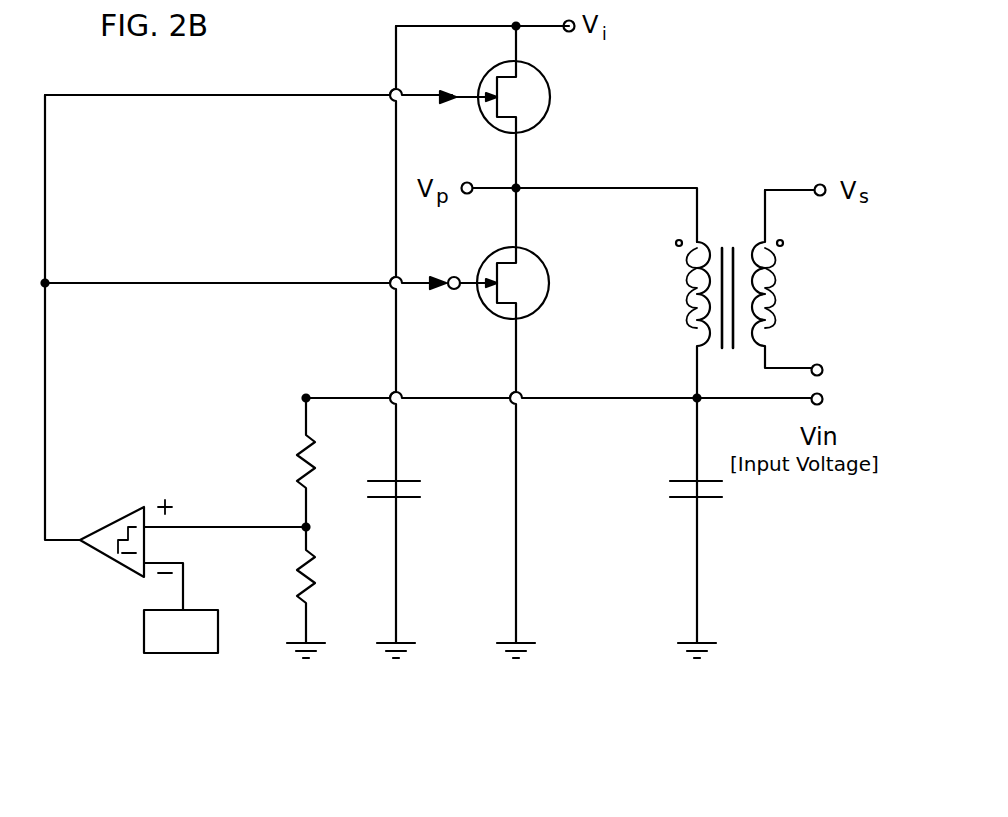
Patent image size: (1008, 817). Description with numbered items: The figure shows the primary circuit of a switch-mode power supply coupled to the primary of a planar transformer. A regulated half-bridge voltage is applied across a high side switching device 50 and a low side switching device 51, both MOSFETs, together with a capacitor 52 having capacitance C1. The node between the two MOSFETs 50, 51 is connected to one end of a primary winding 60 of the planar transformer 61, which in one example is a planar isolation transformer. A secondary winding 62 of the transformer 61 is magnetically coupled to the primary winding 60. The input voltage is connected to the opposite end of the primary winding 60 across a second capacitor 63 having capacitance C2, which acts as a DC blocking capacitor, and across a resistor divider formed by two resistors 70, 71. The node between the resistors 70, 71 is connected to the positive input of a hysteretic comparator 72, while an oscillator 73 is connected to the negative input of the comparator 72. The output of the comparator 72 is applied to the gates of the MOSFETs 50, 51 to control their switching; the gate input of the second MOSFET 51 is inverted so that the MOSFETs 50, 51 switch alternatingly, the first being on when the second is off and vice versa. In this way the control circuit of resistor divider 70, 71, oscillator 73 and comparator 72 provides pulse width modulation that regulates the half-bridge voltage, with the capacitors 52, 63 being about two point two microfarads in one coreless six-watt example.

The high side switching device 50 is at (551, 99).
The low side switching device 51 is at (546, 300).
The capacitor 52 is at (432, 493).
The primary winding 60 is at (682, 292).
The planar transformer 61 is at (726, 263).
The secondary winding 62 is at (783, 296).
The capacitor 63 is at (662, 491).
The resistor 70 is at (294, 458).
The resistor 71 is at (293, 580).
The hysteretic comparator 72 is at (116, 521).
The oscillator 73 is at (183, 655).